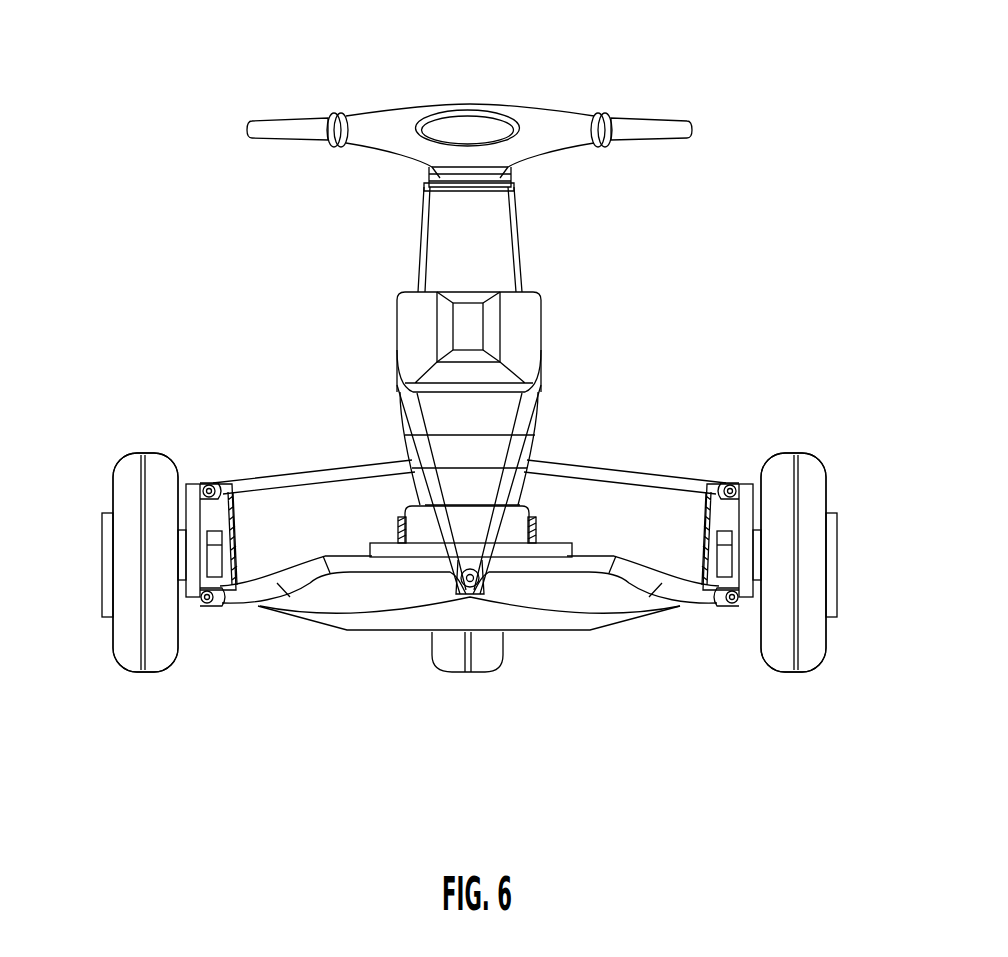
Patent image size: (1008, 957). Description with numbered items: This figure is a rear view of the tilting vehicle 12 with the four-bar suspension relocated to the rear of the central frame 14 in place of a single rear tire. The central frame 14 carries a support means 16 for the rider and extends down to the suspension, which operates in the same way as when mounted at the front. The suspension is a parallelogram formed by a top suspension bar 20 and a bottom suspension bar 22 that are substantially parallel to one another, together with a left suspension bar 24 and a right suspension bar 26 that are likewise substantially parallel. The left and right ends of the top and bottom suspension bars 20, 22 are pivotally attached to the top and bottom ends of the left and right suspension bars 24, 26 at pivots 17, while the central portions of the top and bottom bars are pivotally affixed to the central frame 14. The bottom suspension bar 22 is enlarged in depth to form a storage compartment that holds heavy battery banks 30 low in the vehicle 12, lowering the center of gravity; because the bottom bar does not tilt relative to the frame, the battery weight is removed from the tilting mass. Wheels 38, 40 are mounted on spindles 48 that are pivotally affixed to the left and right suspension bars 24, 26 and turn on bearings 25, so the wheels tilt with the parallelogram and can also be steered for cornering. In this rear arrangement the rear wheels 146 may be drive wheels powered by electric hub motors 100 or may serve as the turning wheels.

The tilting vehicle 12 is at (266, 82).
The central frame 14 is at (490, 246).
The support means 16 is at (430, 318).
The pivots 17 is at (207, 605).
The top suspension bar 20 is at (315, 468).
The bottom suspension bar 22 is at (298, 602).
The left suspension bar 24 is at (224, 482).
The bearings 25 is at (745, 600).
The right suspension bar 26 is at (712, 540).
The battery banks 30 is at (560, 555).
The wheel 38 is at (815, 452).
The wheel 40 is at (130, 452).
The spindles 48 is at (198, 483).
The electric hub motors 100 is at (100, 585).
The rear wheels 146 is at (150, 672).